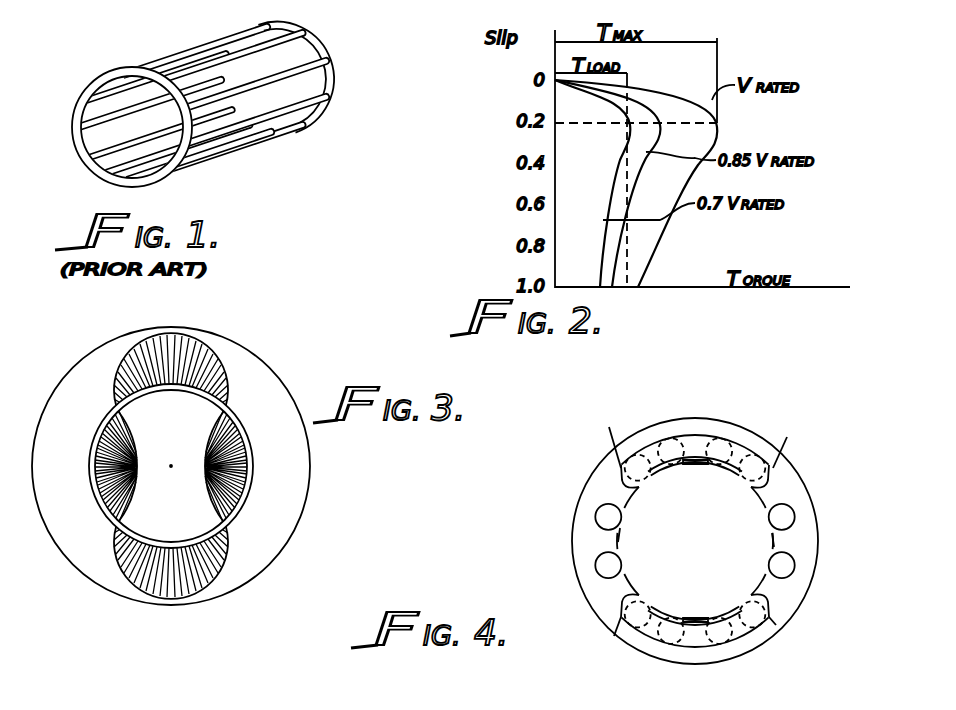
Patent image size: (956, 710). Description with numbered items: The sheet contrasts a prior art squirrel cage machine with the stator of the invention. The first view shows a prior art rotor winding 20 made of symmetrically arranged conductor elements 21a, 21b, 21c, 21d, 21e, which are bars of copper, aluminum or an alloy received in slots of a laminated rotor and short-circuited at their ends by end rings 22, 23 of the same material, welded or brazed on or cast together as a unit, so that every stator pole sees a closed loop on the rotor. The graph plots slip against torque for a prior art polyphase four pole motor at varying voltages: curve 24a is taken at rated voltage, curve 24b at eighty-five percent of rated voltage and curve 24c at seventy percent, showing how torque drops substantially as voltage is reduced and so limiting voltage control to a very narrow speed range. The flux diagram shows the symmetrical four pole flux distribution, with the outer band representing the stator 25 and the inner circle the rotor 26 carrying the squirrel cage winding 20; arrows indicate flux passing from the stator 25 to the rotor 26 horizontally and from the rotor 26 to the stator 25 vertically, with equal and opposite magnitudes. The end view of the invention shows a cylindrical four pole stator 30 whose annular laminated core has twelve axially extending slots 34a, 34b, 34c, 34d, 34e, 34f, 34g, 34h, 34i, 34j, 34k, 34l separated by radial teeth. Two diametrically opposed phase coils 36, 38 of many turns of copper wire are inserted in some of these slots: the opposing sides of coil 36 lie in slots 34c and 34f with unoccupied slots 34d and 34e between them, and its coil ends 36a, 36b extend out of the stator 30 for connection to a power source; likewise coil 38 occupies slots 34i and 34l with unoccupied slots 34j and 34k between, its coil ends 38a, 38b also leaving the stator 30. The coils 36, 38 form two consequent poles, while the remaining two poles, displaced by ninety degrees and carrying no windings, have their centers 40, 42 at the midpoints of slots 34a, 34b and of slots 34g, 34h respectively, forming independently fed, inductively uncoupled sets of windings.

In FIG. 1, the rotor winding 20 is at (228, 101).
In FIG. 1, the conductor element 21a is at (214, 36).
In FIG. 1, the conductor element 21b is at (312, 37).
In FIG. 1, the conductor element 21c is at (333, 68).
In FIG. 1, the conductor element 21d is at (326, 97).
In FIG. 1, the conductor element 21e is at (305, 135).
In FIG. 1, the end ring 22 is at (123, 66).
In FIG. 1, the end ring 23 is at (329, 84).
In FIG. 2, the curve 24a is at (718, 127).
In FIG. 2, the curve 24b is at (648, 112).
In FIG. 2, the curve 24c is at (626, 145).
In FIG. 3, the stator 25 is at (277, 392).
In FIG. 3, the rotor 26 is at (187, 521).
In FIG. 4, the stator 30 is at (577, 533).
In FIG. 4, the slot 34a is at (792, 565).
In FIG. 4, the slot 34b is at (793, 518).
In FIG. 4, the slot 34c is at (752, 486).
In FIG. 4, the slot 34d is at (733, 445).
In FIG. 4, the slot 34e is at (668, 440).
In FIG. 4, the slot 34f is at (645, 487).
In FIG. 4, the slot 34g is at (600, 510).
In FIG. 4, the slot 34h is at (598, 562).
In FIG. 4, the slot 34i is at (620, 602).
In FIG. 4, the slot 34j is at (673, 612).
In FIG. 4, the slot 34k is at (728, 648).
In FIG. 4, the slot 34l is at (745, 603).
In FIG. 4, the stator phase coil 36 is at (706, 435).
In FIG. 4, the coil end 36a is at (609, 427).
In FIG. 4, the coil end 36b is at (787, 437).
In FIG. 4, the stator phase coil 38 is at (692, 637).
In FIG. 4, the coil end 38a is at (614, 636).
In FIG. 4, the coil end 38b is at (776, 625).
In FIG. 4, the pole center 40 is at (618, 535).
In FIG. 4, the pole center 42 is at (773, 540).